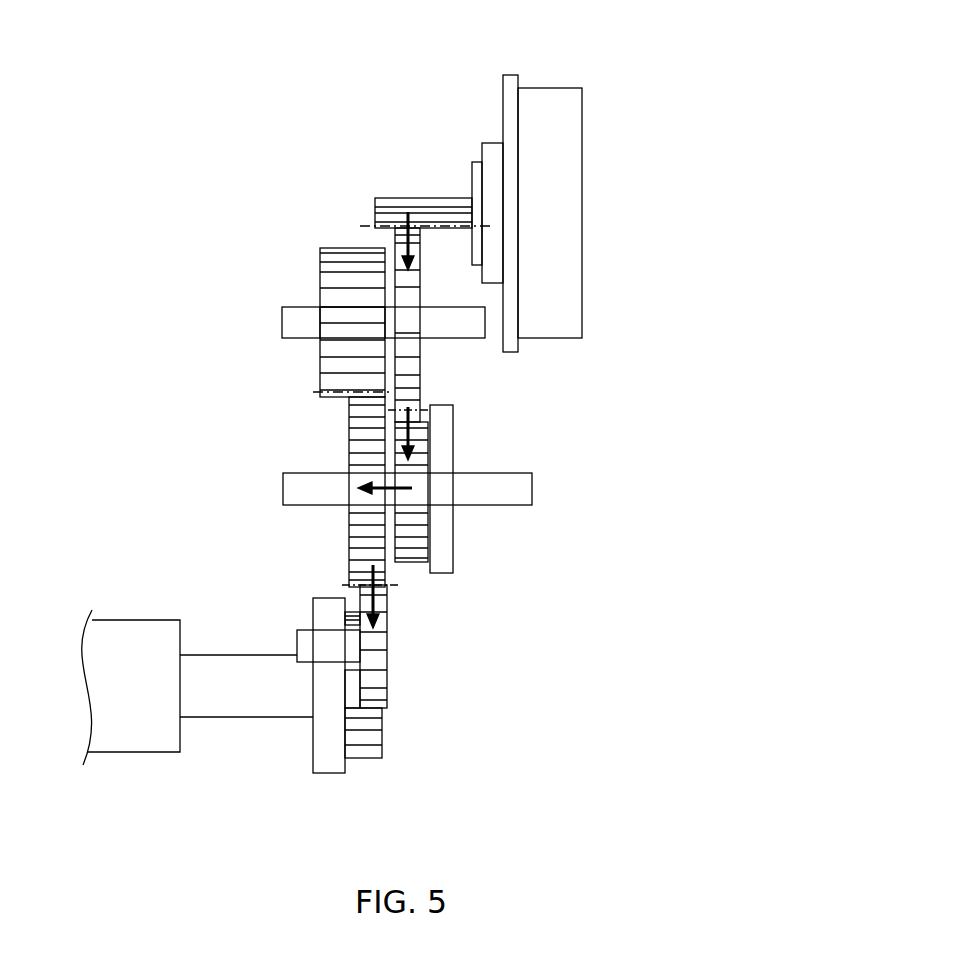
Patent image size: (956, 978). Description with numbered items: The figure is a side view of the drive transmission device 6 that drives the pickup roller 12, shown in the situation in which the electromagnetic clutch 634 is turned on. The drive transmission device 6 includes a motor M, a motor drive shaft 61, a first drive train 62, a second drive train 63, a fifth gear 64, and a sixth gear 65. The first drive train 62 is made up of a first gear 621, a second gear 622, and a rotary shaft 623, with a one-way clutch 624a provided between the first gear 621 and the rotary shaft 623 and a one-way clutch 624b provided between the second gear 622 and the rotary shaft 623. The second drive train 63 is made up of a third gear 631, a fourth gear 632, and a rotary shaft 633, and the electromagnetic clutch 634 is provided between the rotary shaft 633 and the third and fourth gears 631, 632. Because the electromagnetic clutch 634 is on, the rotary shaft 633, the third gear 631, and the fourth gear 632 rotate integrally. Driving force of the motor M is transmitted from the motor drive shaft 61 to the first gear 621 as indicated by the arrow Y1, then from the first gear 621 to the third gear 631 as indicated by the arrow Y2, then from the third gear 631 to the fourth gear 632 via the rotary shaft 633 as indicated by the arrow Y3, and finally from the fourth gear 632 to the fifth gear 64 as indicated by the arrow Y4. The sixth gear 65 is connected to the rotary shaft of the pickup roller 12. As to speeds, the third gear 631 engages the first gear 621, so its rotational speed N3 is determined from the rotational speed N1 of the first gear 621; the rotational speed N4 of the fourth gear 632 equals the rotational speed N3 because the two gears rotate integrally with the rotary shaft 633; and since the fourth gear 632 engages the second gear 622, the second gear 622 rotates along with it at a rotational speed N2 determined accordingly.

The drive transmission device 6 is at (387, 83).
The motor M is at (557, 294).
The motor drive shaft 61 is at (440, 205).
The first drive train 62 is at (272, 262).
The first gear 621 is at (413, 367).
The second gear 622 is at (343, 255).
The rotary shaft 623 is at (288, 323).
The one-way clutch 624a is at (301, 322).
The one-way clutch 624b is at (435, 322).
The rotational speed of the first gear N1 is at (408, 325).
The rotational speed of the second gear N2 is at (351, 322).
The rotational speed of the third gear N3 is at (411, 492).
The rotational speed of the fourth gear N4 is at (370, 492).
The arrow Y1 is at (413, 239).
The arrow Y2 is at (415, 430).
The arrow Y3 is at (388, 487).
The arrow Y4 is at (368, 577).
The second drive train 63 is at (495, 560).
The third gear 631 is at (413, 537).
The fourth gear 632 is at (357, 526).
The rotary shaft 633 is at (521, 489).
The electromagnetic clutch 634 is at (441, 489).
The fifth gear 64 is at (405, 683).
The sixth gear 65 is at (360, 777).
The pickup roller 12 is at (122, 628).